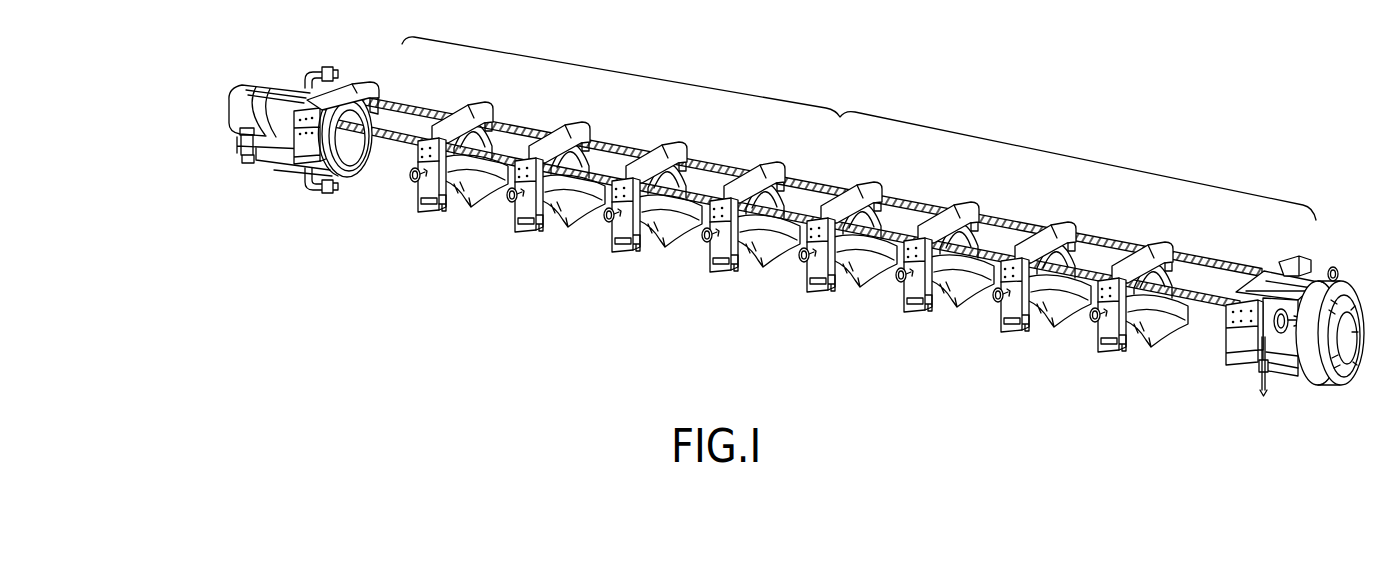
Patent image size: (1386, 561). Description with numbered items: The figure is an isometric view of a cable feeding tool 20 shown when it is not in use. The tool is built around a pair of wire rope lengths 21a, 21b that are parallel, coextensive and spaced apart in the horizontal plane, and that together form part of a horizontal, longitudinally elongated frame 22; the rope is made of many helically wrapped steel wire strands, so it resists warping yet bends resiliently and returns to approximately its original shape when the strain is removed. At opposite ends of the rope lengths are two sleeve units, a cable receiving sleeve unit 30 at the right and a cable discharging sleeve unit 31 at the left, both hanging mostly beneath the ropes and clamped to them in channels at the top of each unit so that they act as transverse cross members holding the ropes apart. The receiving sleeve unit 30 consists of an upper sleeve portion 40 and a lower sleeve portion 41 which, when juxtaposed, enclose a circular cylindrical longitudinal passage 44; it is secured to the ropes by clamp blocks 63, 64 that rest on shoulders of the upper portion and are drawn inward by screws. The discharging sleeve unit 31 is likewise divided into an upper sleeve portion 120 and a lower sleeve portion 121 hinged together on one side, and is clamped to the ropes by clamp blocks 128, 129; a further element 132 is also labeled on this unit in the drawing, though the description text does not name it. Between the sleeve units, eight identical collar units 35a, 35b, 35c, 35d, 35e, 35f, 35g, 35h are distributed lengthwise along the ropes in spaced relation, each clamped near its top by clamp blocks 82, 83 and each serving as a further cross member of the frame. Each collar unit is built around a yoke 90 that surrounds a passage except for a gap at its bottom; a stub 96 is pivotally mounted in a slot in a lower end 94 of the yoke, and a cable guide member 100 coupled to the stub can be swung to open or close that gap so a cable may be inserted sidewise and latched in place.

The cable feeding tool 20 is at (572, 311).
The wire rope length 21a is at (817, 182).
The wire rope length 21b is at (795, 258).
The frame 22 is at (859, 128).
The cable receiving sleeve unit 30 is at (1288, 321).
The cable discharging sleeve unit 31 is at (314, 119).
The collar unit 35a is at (1127, 302).
The collar unit 35b is at (1020, 295).
The collar unit 35c is at (920, 273).
The collar unit 35d is at (831, 257).
The collar unit 35e is at (718, 232).
The collar unit 35f is at (622, 212).
The collar unit 35g is at (527, 197).
The collar unit 35h is at (447, 159).
The upper sleeve portion 40 is at (1260, 278).
The lower sleeve portion 41 is at (1266, 377).
The circular cylindrical longitudinal passage 44 is at (1345, 352).
The clamp block 63 is at (1299, 266).
The clamp block 64 is at (1246, 320).
The clamp block 82 is at (413, 175).
The clamp block 83 is at (476, 108).
The yoke 90 is at (507, 127).
The lower end of yoke 94 is at (409, 202).
The stub 96 is at (433, 220).
The cable guide member 100 is at (476, 196).
The upper sleeve portion 120 is at (246, 83).
The lower sleeve portion 121 is at (270, 162).
The clamp block 128 is at (307, 130).
The clamp block 129 is at (362, 90).
The ring 132 is at (348, 147).